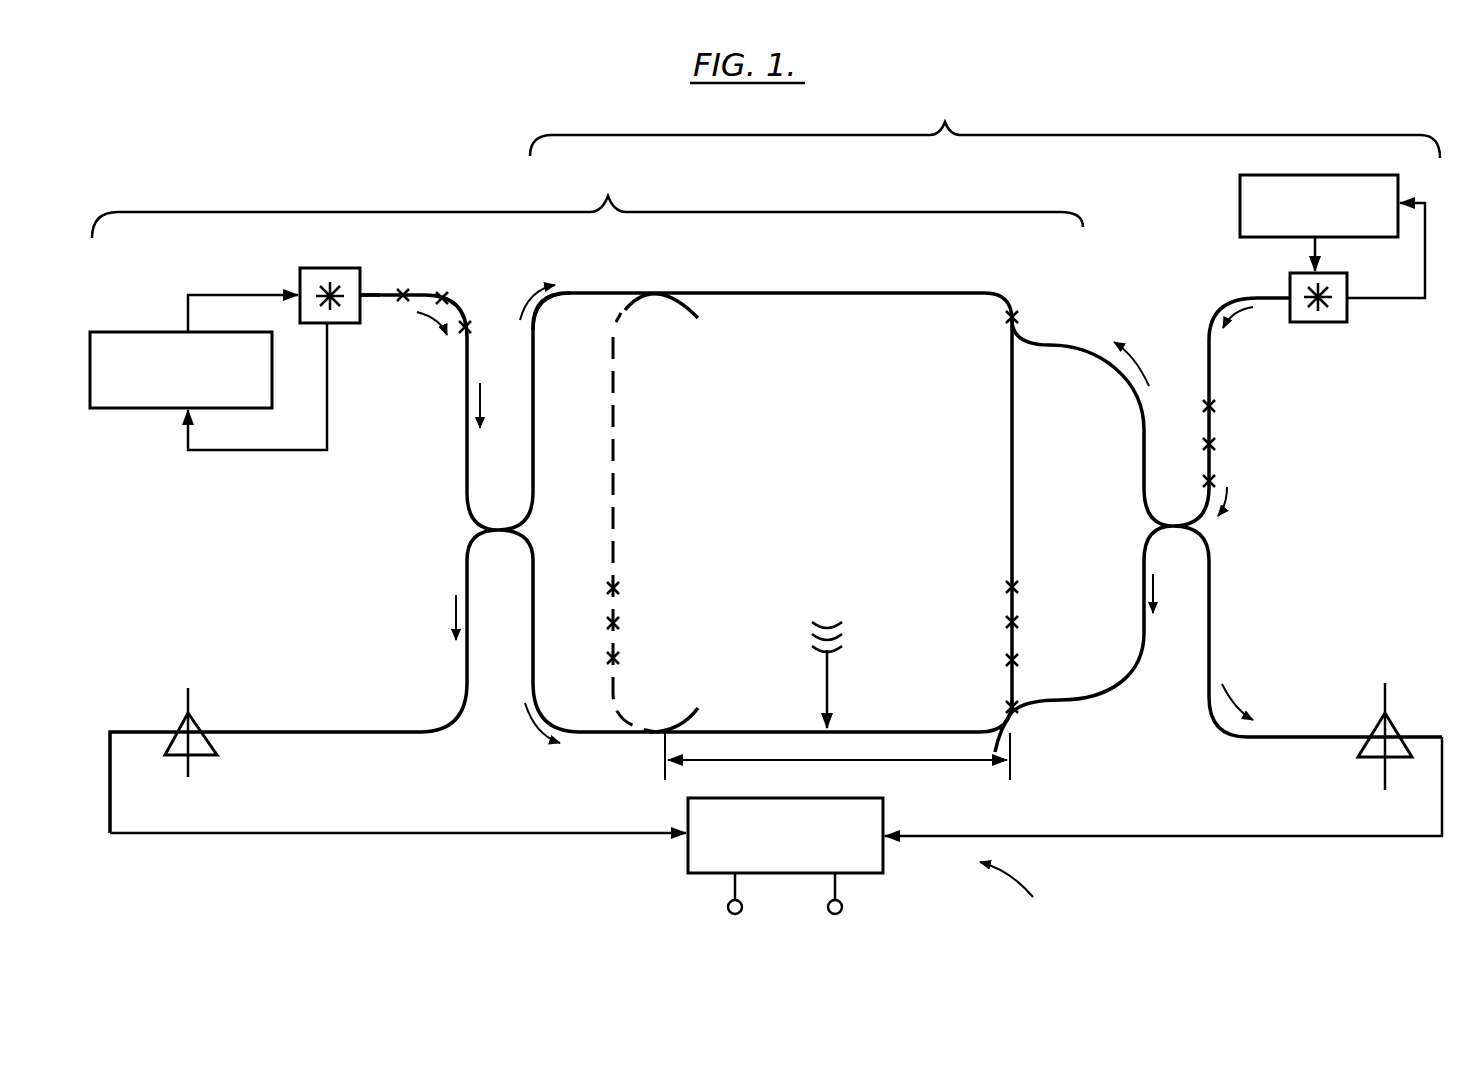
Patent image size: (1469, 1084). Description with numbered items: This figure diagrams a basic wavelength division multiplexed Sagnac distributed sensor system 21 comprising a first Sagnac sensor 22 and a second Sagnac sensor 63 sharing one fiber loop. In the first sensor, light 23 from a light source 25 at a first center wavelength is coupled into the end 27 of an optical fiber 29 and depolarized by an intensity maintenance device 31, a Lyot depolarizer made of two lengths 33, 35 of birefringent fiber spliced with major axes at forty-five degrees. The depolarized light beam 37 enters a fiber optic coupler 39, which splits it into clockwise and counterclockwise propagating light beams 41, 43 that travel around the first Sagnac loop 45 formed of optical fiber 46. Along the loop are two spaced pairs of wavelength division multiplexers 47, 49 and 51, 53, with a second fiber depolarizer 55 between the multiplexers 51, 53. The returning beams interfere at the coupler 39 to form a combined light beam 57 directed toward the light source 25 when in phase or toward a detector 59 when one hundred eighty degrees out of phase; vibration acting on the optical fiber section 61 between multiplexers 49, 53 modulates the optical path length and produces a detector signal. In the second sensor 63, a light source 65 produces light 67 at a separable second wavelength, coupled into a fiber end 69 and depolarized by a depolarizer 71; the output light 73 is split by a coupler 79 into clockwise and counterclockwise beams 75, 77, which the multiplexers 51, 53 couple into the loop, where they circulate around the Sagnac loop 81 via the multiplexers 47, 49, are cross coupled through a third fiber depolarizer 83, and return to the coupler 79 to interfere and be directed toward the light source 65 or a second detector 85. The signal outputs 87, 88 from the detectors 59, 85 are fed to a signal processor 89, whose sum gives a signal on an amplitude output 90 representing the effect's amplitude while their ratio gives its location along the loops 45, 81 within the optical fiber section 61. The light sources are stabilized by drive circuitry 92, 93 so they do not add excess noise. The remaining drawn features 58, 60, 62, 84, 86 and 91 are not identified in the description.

The wavelength division multiplexed Sagnac distributed sensor system 21 is at (1031, 892).
The first Sagnac sensor 22 is at (587, 201).
The light 23 is at (428, 318).
The light source 25 is at (322, 268).
The fiber end 27 is at (368, 292).
The optical fiber 29 is at (368, 300).
The intensity maintenance device 31 is at (458, 300).
The length of birefringent polarization preserving fiber 33 is at (443, 290).
The length of birefringent polarization preserving fiber 35 is at (470, 312).
The depolarized light beam 37 is at (484, 410).
The fiber optic coupler 39 is at (498, 535).
The clockwise propagating light beam 41 is at (535, 292).
The counterclockwise propagating light beam 43 is at (537, 728).
The first Sagnac loop 45 is at (702, 292).
The optical fiber 46 is at (580, 297).
The wavelength division multiplexer 47 is at (657, 300).
The wavelength division multiplexer 49 is at (668, 727).
The wavelength division multiplexer 51 is at (1015, 316).
The wavelength division multiplexer 53 is at (1015, 712).
The second fiber depolarizer 55 is at (1012, 640).
The combined light beam 57 is at (452, 616).
The output fiber to detector 58 is at (338, 735).
The detector 59 is at (197, 722).
The external signal input 60 is at (829, 680).
The optical fiber section 61 is at (900, 760).
The vertical fiber segment 62 is at (1010, 455).
The second Sagnac sensor 63 is at (985, 125).
The light source 65 is at (1322, 323).
The light 67 is at (1245, 308).
The fiber end 69 is at (1288, 292).
The depolarizer 71 is at (1215, 444).
The output light 73 is at (1232, 500).
The clockwise beam 75 is at (1157, 596).
The counterclockwise beam 77 is at (1148, 372).
The coupler 79 is at (1173, 522).
The Sagnac loop 81 is at (923, 727).
The third fiber depolarizer 83 is at (618, 592).
The light propagation direction 84 is at (1230, 705).
The second detector 85 is at (1378, 723).
The fiber loop 86 is at (616, 462).
The signal output 87 is at (400, 833).
The signal output 88 is at (1135, 838).
The signal processor 89 is at (688, 858).
The amplitude output 90 is at (727, 910).
The output terminal 91 is at (843, 907).
The drive circuitry 92 is at (128, 410).
The drive circuitry 93 is at (1240, 200).